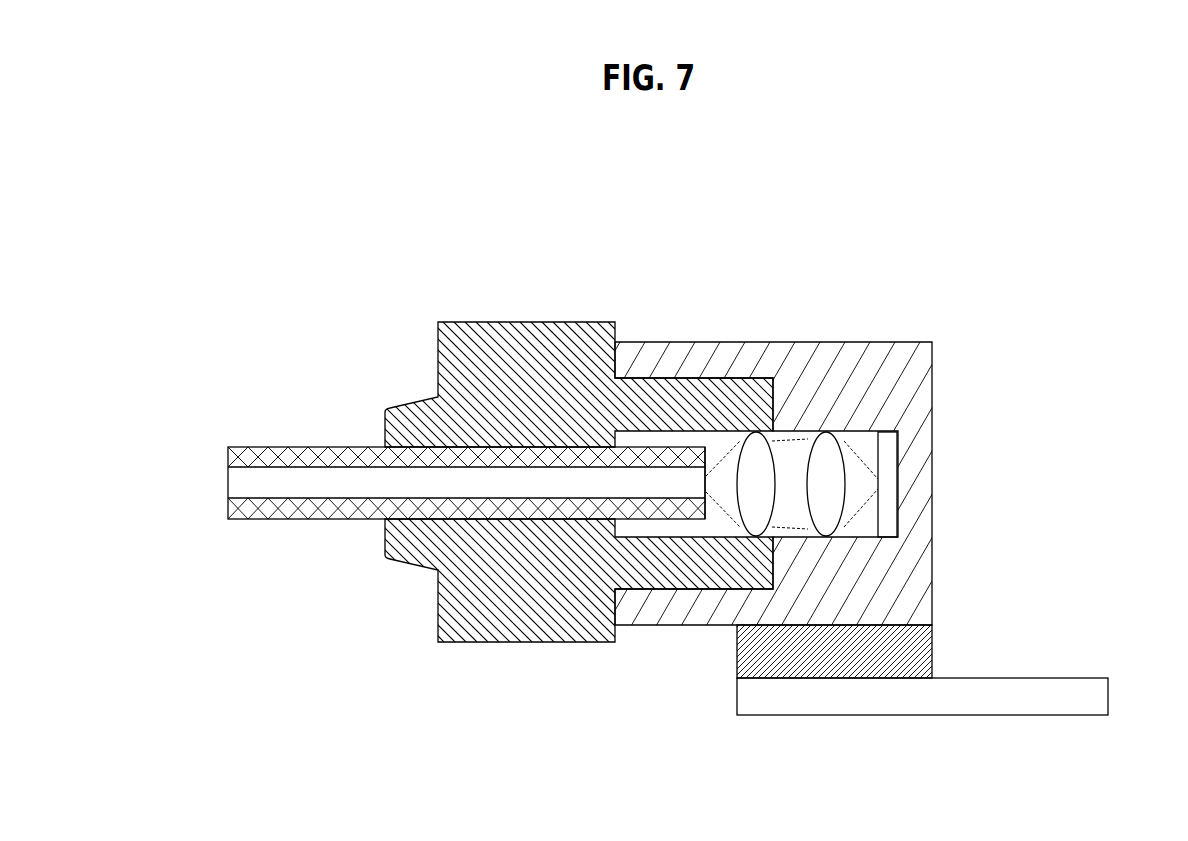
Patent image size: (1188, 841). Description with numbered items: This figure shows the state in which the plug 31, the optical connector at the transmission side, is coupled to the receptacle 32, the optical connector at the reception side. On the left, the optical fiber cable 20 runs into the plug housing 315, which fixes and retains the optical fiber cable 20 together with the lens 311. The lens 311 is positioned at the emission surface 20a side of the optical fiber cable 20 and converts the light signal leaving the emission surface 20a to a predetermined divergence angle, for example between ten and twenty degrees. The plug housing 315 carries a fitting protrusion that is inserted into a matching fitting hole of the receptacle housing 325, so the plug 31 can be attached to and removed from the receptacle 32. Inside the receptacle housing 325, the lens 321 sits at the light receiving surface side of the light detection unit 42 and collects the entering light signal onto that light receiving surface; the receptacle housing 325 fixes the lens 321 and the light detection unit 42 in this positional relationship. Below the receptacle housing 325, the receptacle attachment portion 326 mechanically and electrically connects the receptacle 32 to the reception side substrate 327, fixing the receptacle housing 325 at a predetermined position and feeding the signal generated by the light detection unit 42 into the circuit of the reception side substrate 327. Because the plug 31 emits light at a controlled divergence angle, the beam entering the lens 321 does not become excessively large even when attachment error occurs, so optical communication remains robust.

The optical fiber cable 20 is at (476, 382).
The emission surface 20a is at (707, 480).
The plug 31 is at (575, 437).
The plug housing 315 is at (416, 320).
The receptacle 32 is at (797, 489).
The receptacle housing 325 is at (681, 319).
The lens 311 is at (772, 440).
The lens 321 is at (843, 450).
The light detection unit 42 is at (887, 485).
The receptacle attachment portion 326 is at (737, 643).
The reception side substrate 327 is at (1020, 677).